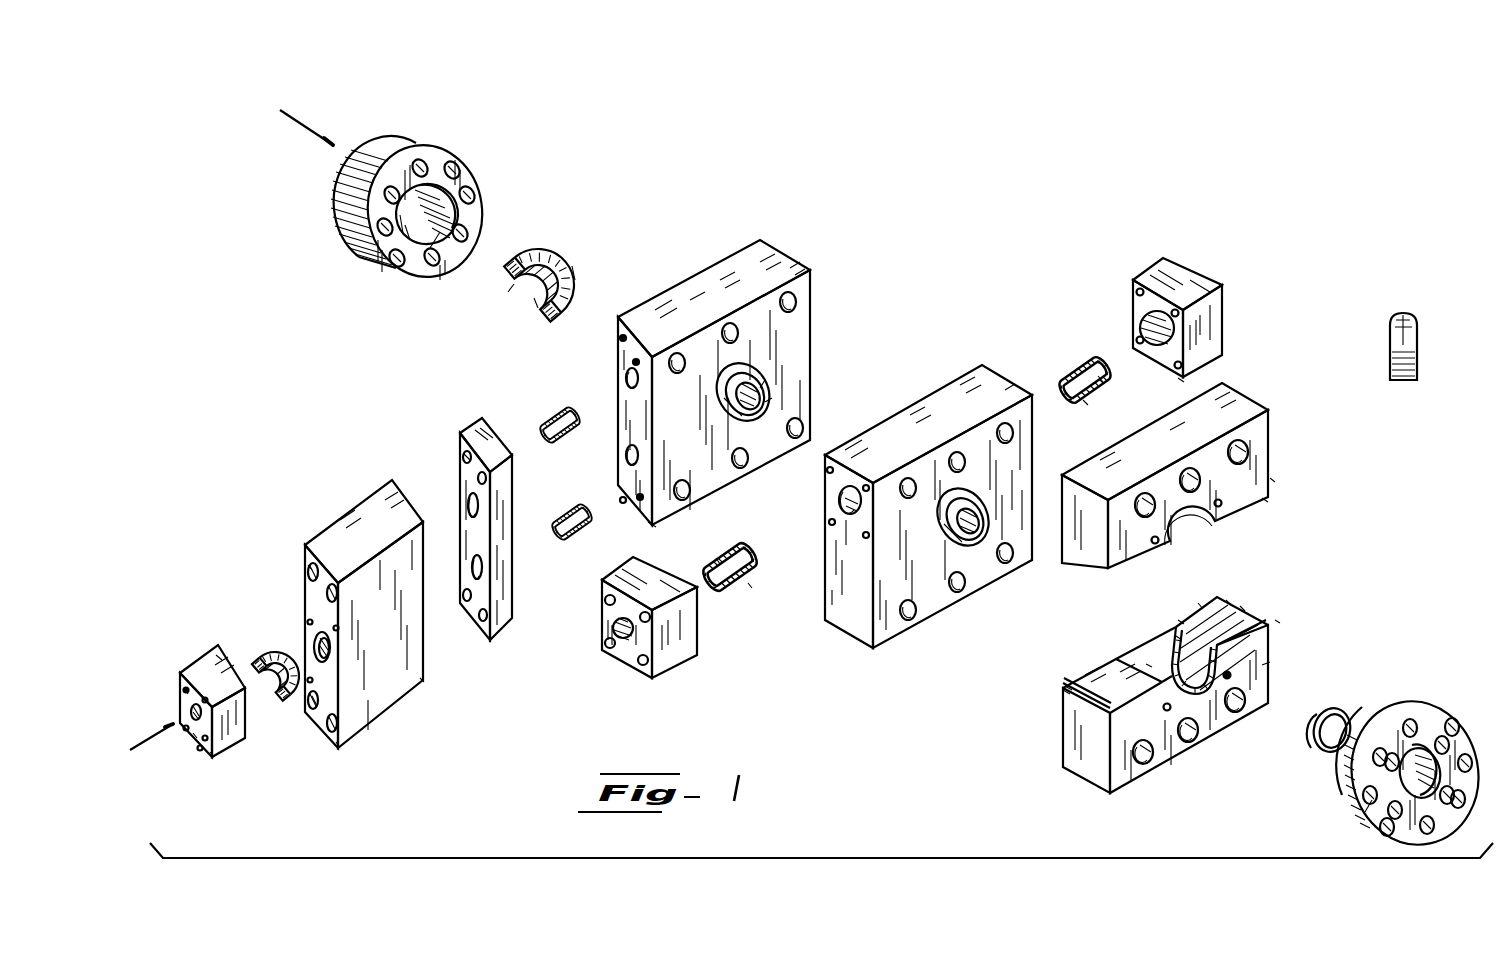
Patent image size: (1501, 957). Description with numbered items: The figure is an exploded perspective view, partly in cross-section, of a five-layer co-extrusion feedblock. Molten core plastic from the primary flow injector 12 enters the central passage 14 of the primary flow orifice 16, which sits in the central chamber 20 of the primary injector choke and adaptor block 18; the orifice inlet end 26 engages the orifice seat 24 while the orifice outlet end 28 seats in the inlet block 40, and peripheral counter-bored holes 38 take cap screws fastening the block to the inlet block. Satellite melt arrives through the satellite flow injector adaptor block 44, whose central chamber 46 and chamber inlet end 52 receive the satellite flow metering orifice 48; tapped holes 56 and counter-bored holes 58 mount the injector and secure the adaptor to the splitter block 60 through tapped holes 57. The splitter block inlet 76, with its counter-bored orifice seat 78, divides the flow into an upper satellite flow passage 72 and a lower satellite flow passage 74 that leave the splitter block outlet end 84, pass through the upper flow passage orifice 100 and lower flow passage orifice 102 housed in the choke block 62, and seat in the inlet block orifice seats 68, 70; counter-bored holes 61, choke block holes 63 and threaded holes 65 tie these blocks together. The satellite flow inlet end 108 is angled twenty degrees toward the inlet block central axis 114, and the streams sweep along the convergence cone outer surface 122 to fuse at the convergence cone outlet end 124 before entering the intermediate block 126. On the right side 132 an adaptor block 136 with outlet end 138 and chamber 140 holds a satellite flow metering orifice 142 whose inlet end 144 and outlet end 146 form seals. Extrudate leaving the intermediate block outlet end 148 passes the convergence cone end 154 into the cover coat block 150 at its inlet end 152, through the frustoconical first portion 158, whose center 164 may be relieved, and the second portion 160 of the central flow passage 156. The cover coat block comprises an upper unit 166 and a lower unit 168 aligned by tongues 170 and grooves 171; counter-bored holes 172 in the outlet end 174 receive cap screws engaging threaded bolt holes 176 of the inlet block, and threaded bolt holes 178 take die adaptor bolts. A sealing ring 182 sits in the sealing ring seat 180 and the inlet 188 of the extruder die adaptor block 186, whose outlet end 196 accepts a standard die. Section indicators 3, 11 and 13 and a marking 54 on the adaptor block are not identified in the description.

The section line 3- 3 is at (803, 580).
The section line 11- 11 is at (598, 437).
The primary flow injector 12 is at (628, 425).
The section line 13- 13 is at (803, 520).
The central passage 14 is at (522, 300).
The primary flow orifice 16 is at (535, 303).
The primary injector choke and adaptor block 18 is at (485, 178).
The central chamber 20 is at (458, 224).
The orifice seat 24 is at (440, 234).
The primary flow orifice inlet end 26 is at (507, 288).
The orifice outlet end 28 is at (575, 272).
The peripheral counter-bored holes 38 is at (455, 168).
The inlet block 40 is at (767, 263).
The satellite flow injector adaptor block 44 is at (200, 672).
The central chamber 46 is at (195, 736).
The satellite flow metering orifice 48 is at (270, 648).
The chamber inlet end 52 is at (212, 758).
The end block top face 54 is at (220, 655).
The drilled tapped holes 56 is at (190, 710).
The tapped holes 57 is at (339, 747).
The drilled counter-bored holes 58 is at (185, 690).
The splitter block 60 is at (340, 518).
The drilled counter-bored holes 61 is at (311, 568).
The choke block 62 is at (463, 430).
The choke block holes 63 is at (466, 457).
The drilled and threaded holes 65 is at (616, 337).
The inlet block orifice seat 68 is at (628, 378).
The inlet block orifice seat 70 is at (628, 466).
The upper satellite flow passage 72 is at (470, 508).
The lower satellite flow passage 74 is at (475, 570).
The splitter block inlet 76 is at (318, 640).
The counter-bored orifice seat 78 is at (312, 700).
The splitter block outlet end 84 is at (425, 679).
The upper flow passage orifice 100 is at (553, 436).
The lower flow passage orifice 102 is at (557, 524).
The satellite flow inlet end 108 is at (620, 335).
The inlet block central axis 114 is at (768, 400).
The convergence cone outer surface 122 is at (762, 388).
The convergence cone outlet end 124 is at (770, 403).
The intermediate block 126 is at (1005, 369).
The right side 132 is at (650, 525).
The adaptor block 136 is at (601, 578).
The adaptor block outlet end 138 is at (1178, 380).
The chamber 140 is at (1138, 328).
The satellite flow metering orifice 142 is at (749, 586).
The orifice inlet end 144 is at (716, 560).
The orifice outlet end 146 is at (742, 548).
The intermediate block outlet end 148 is at (935, 615).
The cover coat block 150 is at (1278, 479).
The inlet end 152 is at (1066, 686).
The intermediate block convergence cone end 154 is at (975, 545).
The central flow passage 156 is at (1228, 602).
The first portion 158 is at (1177, 638).
The second portion 160 is at (1242, 608).
The center of frustoconical first portion 164 is at (1148, 665).
The upper unit 166 is at (1270, 412).
The lower unit 168 is at (1063, 720).
The tongues 170 is at (1265, 499).
The grooves 171 is at (1063, 690).
The drilled and counter bored holes 172 is at (1243, 708).
The cover coat outlet end 174 is at (1268, 665).
The threaded bolt holes 176 is at (805, 430).
The threaded bolt holes 178 is at (1226, 680).
The sealing ring seat 180 is at (1180, 621).
The sealing ring 182 is at (1404, 382).
The extruder die adaptor block 186 is at (1360, 779).
The extruder die adaptor block inlet 188 is at (1420, 772).
The adaptor block outlet end 196 is at (1375, 806).